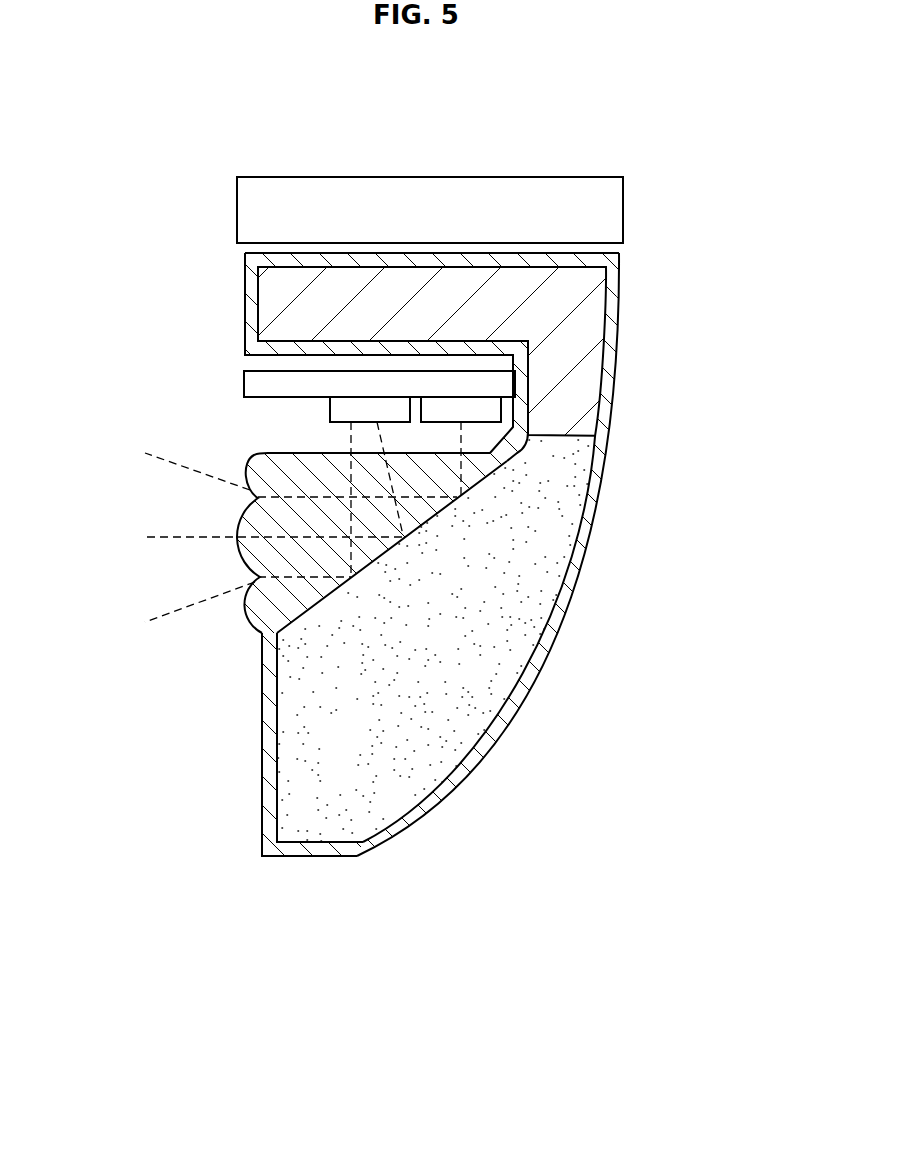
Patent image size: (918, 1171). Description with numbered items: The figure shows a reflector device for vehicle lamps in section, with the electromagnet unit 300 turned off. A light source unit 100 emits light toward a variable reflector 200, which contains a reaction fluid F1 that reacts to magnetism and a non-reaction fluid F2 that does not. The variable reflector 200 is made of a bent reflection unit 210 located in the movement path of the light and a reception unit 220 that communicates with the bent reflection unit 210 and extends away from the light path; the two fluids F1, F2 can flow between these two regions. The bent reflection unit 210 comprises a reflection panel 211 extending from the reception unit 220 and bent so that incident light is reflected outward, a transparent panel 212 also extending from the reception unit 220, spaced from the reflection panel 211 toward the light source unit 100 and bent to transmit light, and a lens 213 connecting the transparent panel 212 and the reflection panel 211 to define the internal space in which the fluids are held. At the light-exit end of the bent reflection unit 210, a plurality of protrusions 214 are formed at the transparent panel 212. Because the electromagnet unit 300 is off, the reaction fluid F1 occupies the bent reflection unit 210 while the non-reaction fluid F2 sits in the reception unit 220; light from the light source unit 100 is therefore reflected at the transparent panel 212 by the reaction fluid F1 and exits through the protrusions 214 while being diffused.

The light source unit 100 is at (308, 403).
The variable reflector 200 is at (604, 560).
The bent reflection unit 210 is at (459, 628).
The reflection panel 211 is at (458, 797).
The transparent panel 212 is at (373, 553).
The lens 213 is at (264, 753).
The protrusions 214 is at (240, 520).
The reception unit 220 is at (502, 267).
The electromagnet unit 300 is at (356, 168).
The reaction fluid F1 is at (500, 678).
The non-reaction fluid F2 is at (286, 306).